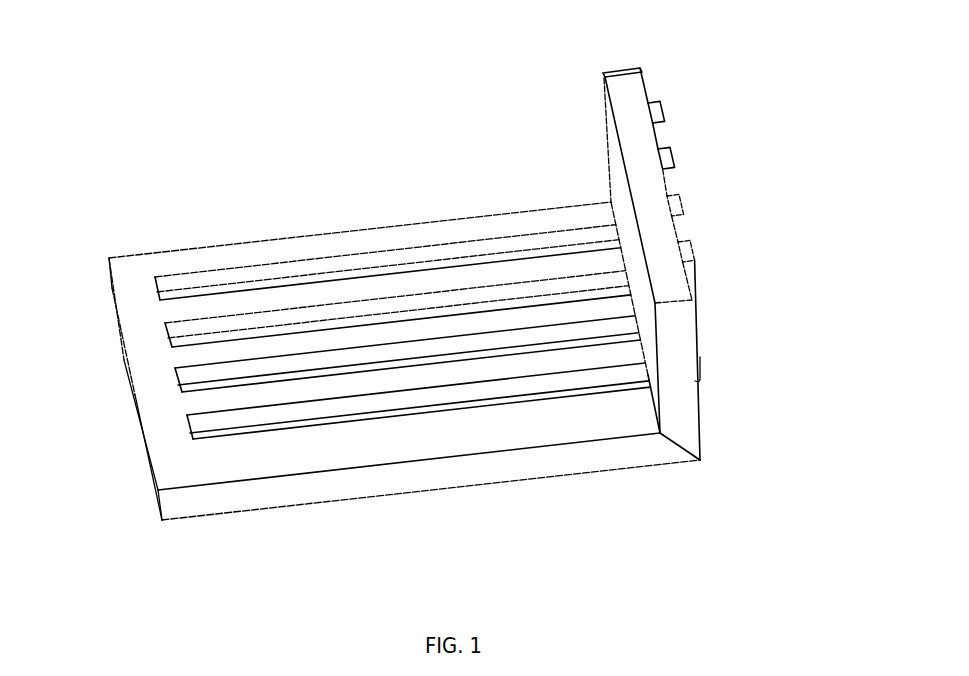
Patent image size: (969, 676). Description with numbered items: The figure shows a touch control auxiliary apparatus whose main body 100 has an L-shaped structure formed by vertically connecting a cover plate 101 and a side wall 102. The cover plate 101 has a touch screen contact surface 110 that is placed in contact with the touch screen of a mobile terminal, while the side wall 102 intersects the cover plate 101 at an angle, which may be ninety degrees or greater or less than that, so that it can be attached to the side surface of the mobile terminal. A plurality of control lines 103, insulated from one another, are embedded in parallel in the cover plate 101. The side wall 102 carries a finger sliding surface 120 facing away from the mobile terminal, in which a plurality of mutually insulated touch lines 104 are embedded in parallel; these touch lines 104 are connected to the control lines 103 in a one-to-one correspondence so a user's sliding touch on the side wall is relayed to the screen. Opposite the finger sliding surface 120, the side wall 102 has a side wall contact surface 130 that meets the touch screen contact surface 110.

The main body 100 is at (448, 278).
The cover plate 101 is at (637, 445).
The side wall 102 is at (725, 360).
The control lines 103 is at (330, 317).
The touch lines 104 is at (662, 110).
The touch screen contact surface 110 is at (180, 258).
The finger sliding surface 120 is at (647, 81).
The side wall contact surface 130 is at (617, 172).